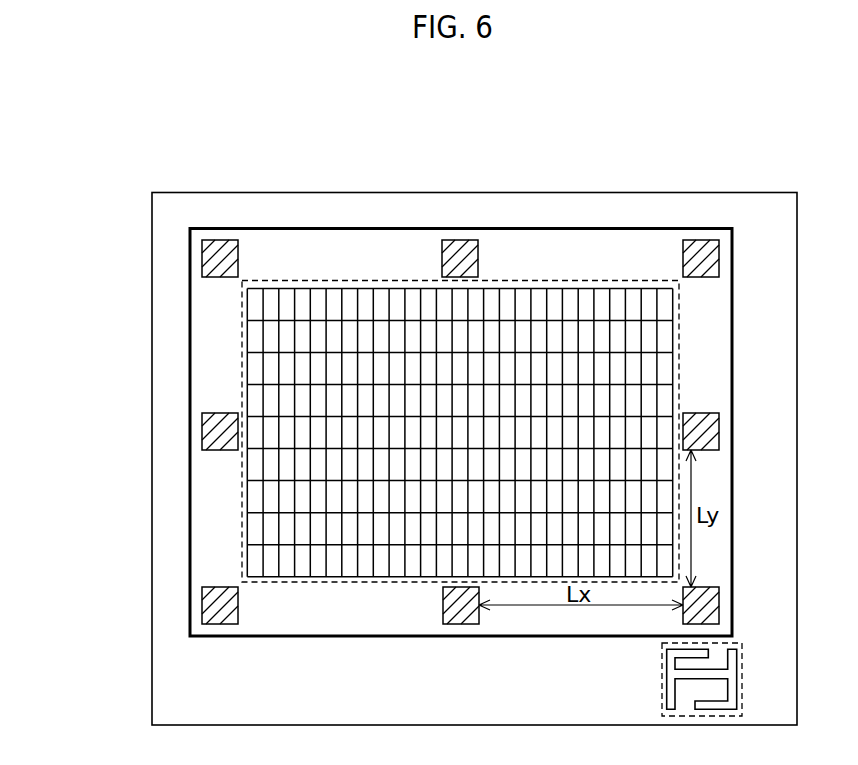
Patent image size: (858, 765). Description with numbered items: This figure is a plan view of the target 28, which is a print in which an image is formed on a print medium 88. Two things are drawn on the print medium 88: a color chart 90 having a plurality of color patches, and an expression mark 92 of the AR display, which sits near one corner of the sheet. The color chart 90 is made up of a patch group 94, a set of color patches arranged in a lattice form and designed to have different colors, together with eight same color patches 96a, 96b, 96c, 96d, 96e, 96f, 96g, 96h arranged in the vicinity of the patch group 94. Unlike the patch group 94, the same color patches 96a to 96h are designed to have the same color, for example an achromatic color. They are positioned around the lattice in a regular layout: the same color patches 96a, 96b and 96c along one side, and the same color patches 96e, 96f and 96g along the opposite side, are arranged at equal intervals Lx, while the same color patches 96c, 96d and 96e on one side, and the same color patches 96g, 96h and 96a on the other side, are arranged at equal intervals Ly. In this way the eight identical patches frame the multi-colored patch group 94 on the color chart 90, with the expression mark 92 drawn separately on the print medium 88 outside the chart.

The target 28 is at (75, 188).
The print medium 88 is at (775, 207).
The color chart 90 is at (733, 357).
The patch group 94 is at (293, 282).
The expression mark 92 is at (661, 684).
The same color patch 96a is at (704, 605).
The same color patch 96b is at (460, 613).
The same color patch 96c is at (213, 605).
The same color patch 96d is at (213, 432).
The same color patch 96e is at (213, 259).
The same color patch 96f is at (462, 247).
The same color patch 96g is at (704, 257).
The same color patch 96h is at (708, 432).